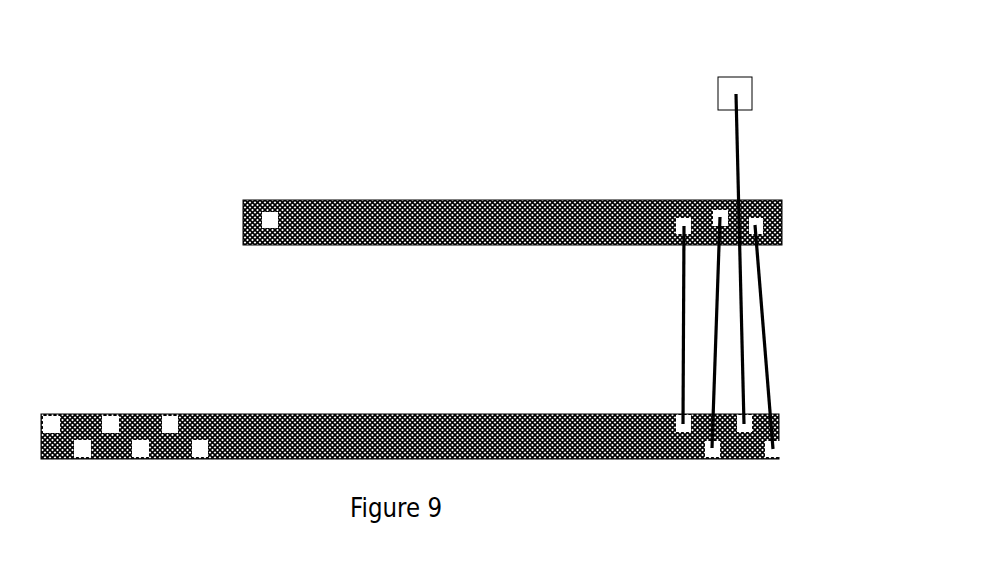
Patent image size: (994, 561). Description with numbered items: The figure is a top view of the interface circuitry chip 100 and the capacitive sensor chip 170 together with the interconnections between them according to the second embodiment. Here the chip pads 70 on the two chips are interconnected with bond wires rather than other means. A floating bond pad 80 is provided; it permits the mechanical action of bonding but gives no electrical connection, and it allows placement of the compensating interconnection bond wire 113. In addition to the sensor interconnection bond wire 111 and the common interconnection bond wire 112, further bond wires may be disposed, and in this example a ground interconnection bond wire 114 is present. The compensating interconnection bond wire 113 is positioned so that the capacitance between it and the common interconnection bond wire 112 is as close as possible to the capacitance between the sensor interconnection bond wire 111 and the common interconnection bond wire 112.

The capacitive sensor chip 170 is at (415, 222).
The interface circuitry chip 100 is at (397, 430).
The floating bond pad 80 is at (743, 100).
The chip pads 70 is at (757, 223).
The compensating interconnection bond wire 113 is at (735, 152).
The common interconnection bond wire 112 is at (683, 312).
The ground interconnection bond wire 114 is at (713, 360).
The sensor interconnection bond wire 111 is at (760, 320).